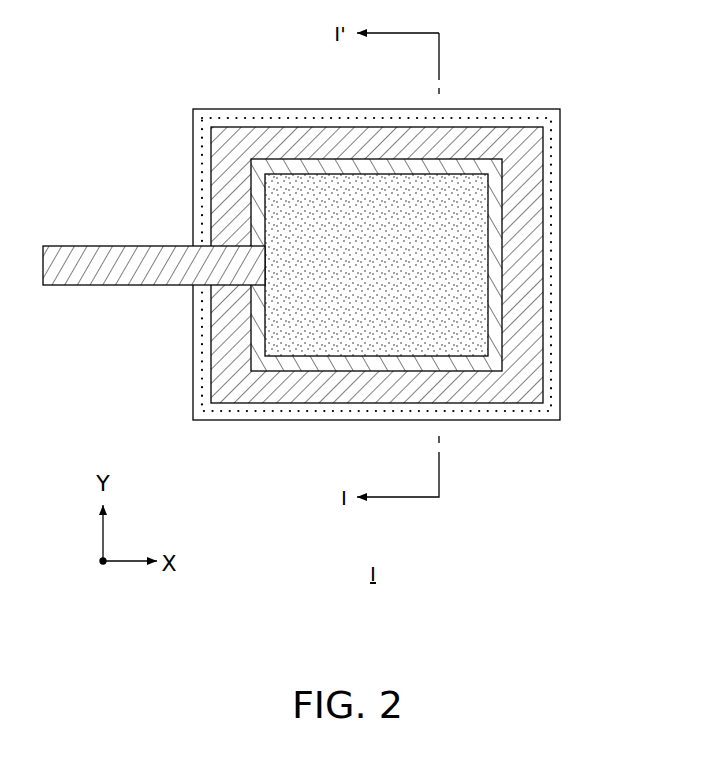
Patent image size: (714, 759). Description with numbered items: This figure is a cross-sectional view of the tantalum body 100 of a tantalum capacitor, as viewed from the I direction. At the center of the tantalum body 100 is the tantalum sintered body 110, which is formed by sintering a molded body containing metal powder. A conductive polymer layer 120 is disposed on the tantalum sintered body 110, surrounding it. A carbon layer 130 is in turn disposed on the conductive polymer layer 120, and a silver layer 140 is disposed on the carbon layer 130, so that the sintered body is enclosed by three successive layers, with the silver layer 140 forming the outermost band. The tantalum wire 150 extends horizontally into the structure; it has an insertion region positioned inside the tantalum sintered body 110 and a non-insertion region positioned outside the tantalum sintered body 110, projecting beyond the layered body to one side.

The tantalum body 100 is at (349, 259).
The tantalum sintered body 110 is at (313, 325).
The conductive polymer layer 120 is at (322, 167).
The carbon layer 130 is at (258, 140).
The silver (Ag) layer 140 is at (212, 114).
The tantalum wire 150 is at (78, 246).